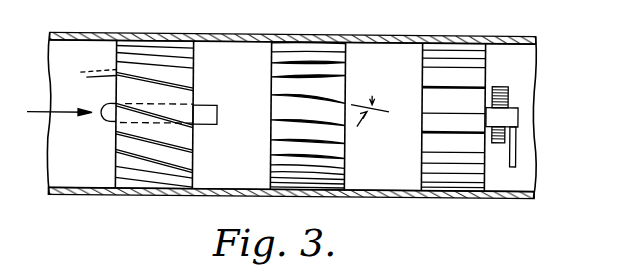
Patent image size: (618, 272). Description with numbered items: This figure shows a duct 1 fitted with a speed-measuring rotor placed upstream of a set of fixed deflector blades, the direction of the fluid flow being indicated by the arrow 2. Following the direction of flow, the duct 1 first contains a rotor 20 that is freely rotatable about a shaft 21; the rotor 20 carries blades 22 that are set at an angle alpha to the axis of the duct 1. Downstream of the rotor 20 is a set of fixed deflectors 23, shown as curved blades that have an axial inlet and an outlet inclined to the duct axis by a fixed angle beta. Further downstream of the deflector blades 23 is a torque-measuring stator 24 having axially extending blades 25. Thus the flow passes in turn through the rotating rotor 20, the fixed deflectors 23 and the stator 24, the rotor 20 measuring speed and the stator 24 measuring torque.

The duct 1 is at (247, 34).
The direction of flow 2 is at (58, 114).
The rotor 20 is at (153, 47).
The shaft 21 is at (213, 107).
The blades 22 is at (195, 145).
The fixed deflectors 23 is at (279, 70).
The torque-measuring stator 24 is at (421, 153).
The axially extending blades 25 is at (470, 61).